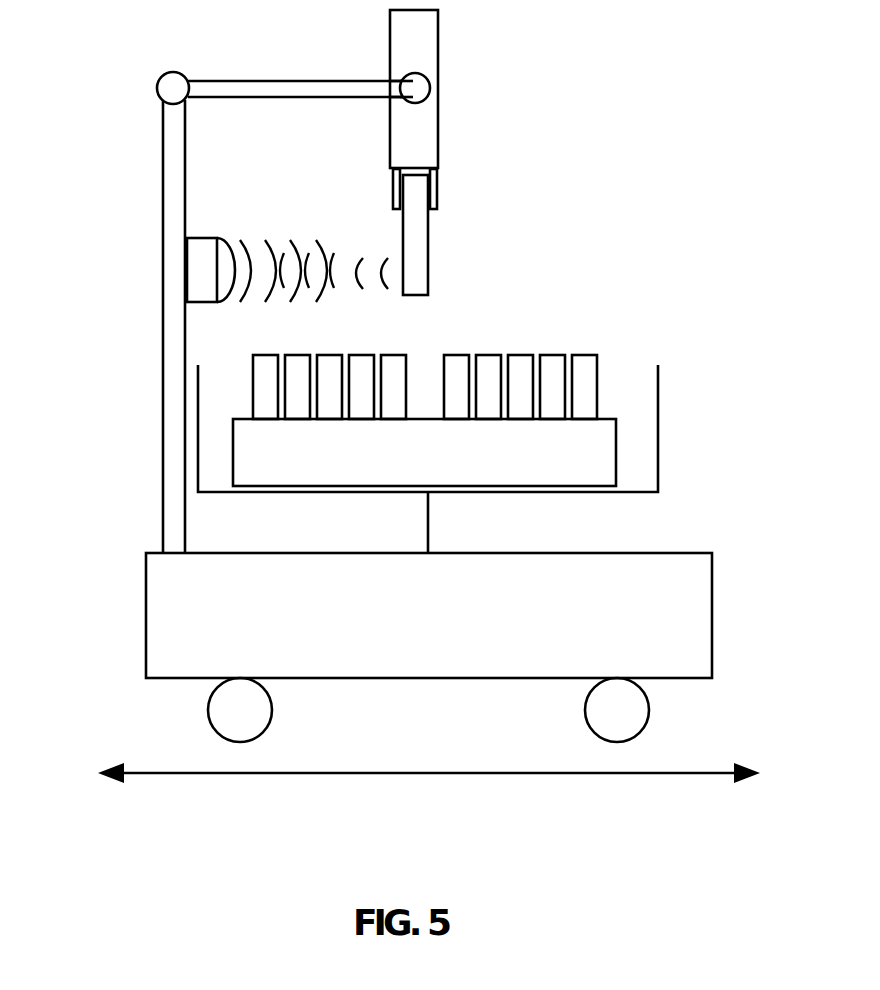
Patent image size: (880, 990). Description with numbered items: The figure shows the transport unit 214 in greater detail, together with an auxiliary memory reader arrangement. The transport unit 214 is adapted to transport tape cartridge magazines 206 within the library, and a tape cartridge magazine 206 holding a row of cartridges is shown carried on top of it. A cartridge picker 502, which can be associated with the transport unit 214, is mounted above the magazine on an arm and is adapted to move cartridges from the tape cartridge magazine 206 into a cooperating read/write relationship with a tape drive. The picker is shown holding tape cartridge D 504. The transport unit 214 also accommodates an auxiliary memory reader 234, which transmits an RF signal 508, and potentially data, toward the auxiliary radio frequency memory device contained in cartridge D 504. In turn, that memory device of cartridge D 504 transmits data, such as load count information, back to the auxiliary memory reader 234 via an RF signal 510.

The cartridge picker 502 is at (438, 25).
The tape cartridge D 504 is at (428, 280).
The auxiliary memory reader 234 is at (198, 237).
The RF signal 508 is at (241, 210).
The RF signal 510 is at (369, 232).
The tape cartridge magazine 206 is at (606, 416).
The transport unit 214 is at (146, 622).